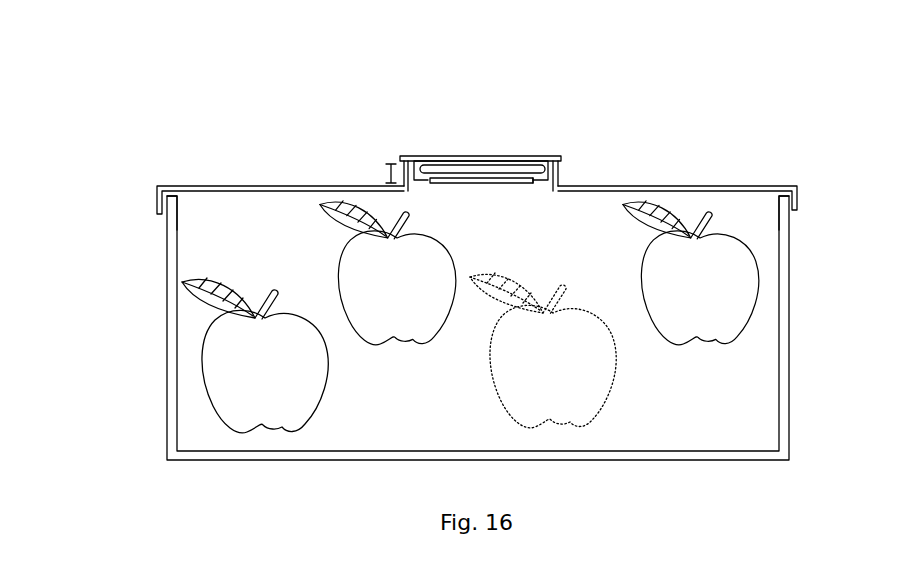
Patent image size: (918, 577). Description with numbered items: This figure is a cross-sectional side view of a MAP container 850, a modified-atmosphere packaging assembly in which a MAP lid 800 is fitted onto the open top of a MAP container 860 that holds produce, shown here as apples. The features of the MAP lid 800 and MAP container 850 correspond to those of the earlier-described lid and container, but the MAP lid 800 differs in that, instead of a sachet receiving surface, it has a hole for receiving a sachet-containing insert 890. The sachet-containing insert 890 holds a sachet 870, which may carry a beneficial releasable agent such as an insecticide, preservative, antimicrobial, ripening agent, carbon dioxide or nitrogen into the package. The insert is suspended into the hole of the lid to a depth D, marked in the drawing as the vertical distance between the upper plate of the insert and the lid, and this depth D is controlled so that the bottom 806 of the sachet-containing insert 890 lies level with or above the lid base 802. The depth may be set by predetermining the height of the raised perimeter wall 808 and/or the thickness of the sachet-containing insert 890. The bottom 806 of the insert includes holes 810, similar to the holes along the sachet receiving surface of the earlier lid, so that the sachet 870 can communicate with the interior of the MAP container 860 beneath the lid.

The MAP container 850 is at (142, 113).
The MAP lid 800 is at (157, 200).
The lid base 802 is at (173, 190).
The raised perimeter wall 808 is at (558, 177).
The sachet-containing insert 890 is at (513, 157).
The sachet 870 is at (558, 168).
The bottom 806 is at (462, 183).
The holes 810 is at (535, 183).
The MAP container 860 is at (287, 460).
The depth D is at (383, 170).